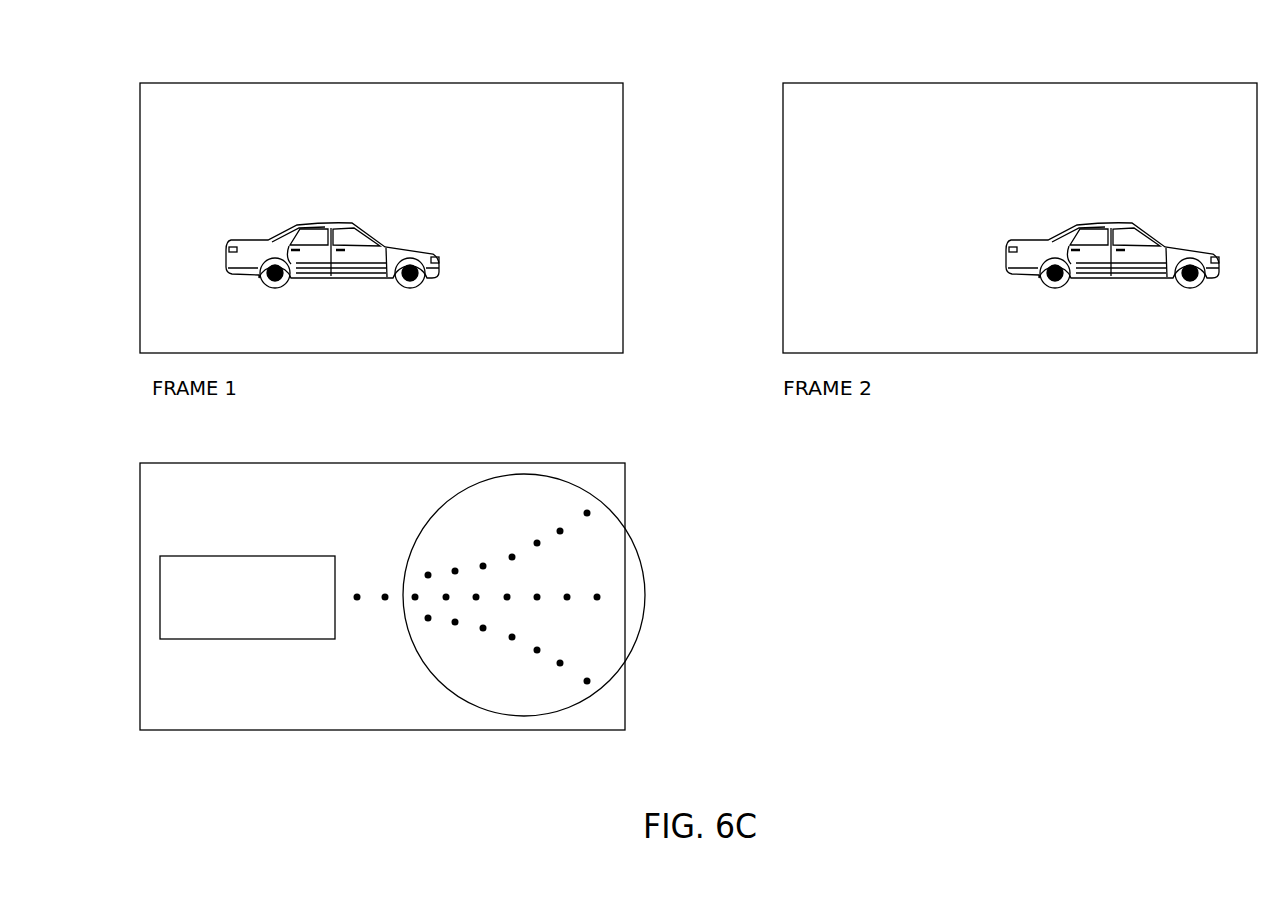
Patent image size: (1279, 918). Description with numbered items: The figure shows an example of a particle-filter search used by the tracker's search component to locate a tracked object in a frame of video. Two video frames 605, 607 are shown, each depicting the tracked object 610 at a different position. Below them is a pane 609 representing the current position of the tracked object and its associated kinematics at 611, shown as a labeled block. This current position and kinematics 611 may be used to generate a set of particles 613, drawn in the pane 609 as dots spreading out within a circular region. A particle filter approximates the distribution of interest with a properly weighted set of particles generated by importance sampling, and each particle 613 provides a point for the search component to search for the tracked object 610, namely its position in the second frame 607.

The frame 605 is at (540, 83).
The frame 607 is at (1170, 83).
The pane 609 is at (470, 463).
The object 610 is at (378, 243).
The current position and kinematics 611 is at (295, 556).
The set of particles 613 is at (640, 563).